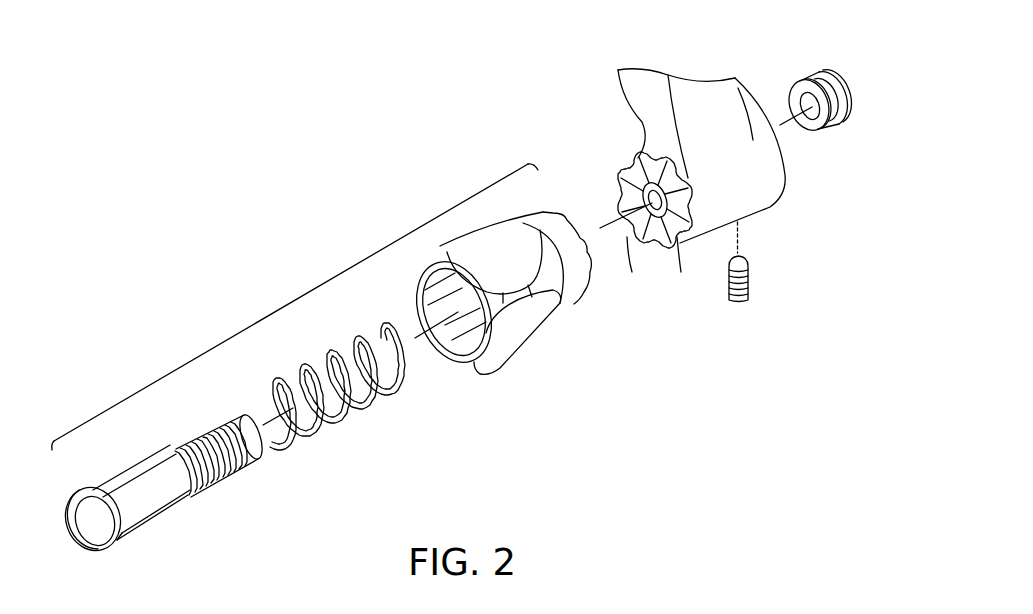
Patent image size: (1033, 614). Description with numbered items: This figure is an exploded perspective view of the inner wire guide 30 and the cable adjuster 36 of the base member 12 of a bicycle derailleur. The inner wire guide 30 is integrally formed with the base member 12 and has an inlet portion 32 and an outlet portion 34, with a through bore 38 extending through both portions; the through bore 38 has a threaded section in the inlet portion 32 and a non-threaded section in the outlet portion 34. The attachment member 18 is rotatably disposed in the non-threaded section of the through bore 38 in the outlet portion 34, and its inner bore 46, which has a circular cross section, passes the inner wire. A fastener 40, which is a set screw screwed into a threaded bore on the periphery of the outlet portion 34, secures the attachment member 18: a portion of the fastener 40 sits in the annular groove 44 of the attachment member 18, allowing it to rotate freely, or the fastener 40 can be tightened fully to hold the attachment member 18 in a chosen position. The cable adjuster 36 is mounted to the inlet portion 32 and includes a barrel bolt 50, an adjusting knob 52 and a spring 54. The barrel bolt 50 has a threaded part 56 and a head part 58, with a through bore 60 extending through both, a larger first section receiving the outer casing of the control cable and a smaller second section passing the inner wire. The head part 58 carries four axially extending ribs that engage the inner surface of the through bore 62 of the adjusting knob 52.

The base member 12 is at (705, 170).
The attachment member 18 is at (812, 91).
The inner wire guide 30 is at (732, 170).
The inlet portion 32 is at (653, 230).
The outlet portion 34 is at (789, 178).
The cable adjuster 36 is at (285, 308).
The through bore 38 is at (650, 215).
The fastener 40 is at (720, 283).
The annular groove 44 is at (838, 120).
The inner bore 46 is at (797, 105).
The barrel bolt 50 is at (161, 500).
The adjusting knob 52 is at (484, 306).
The spring 54 is at (356, 416).
The threaded part 56 is at (232, 472).
The head part 58 is at (150, 533).
The through bore 60 is at (100, 517).
The through bore 62 is at (451, 347).